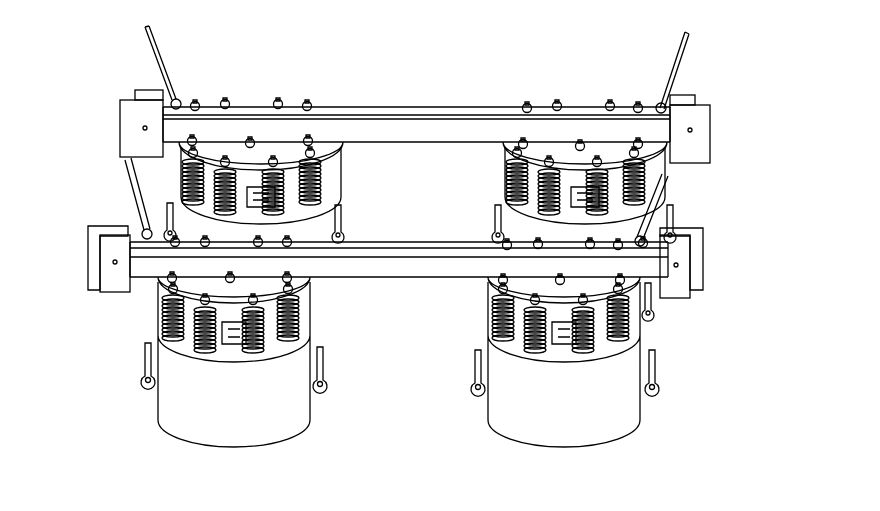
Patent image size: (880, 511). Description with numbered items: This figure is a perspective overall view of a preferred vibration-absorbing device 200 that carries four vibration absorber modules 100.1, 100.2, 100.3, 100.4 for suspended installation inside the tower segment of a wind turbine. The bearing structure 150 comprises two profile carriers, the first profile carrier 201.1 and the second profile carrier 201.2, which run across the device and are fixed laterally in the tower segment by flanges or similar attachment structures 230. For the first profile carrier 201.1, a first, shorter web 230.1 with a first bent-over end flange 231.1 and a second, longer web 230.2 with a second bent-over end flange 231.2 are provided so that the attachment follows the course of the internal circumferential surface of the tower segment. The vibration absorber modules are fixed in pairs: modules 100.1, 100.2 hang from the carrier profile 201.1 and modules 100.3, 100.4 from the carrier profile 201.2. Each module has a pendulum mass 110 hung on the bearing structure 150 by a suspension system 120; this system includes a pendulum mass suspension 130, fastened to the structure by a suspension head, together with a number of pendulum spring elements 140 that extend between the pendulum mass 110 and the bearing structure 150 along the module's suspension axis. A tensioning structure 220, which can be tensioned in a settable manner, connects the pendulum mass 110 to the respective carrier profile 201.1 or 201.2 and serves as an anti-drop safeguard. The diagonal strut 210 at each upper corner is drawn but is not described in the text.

The vibration absorber module 100.1 is at (146, 331).
The vibration absorber module 100.2 is at (660, 302).
The vibration absorber module 100.3 is at (106, 136).
The vibration absorber module 100.4 is at (673, 205).
The pendulum mass 110 is at (634, 408).
The suspension system 120 is at (477, 336).
The pendulum mass suspension 130 is at (560, 360).
The pendulum spring elements 140 is at (637, 330).
The bearing structure 150 is at (482, 300).
The vibration-absorbing device 200 is at (710, 50).
The profile carrier 201.1 is at (408, 243).
The profile carrier 201.2 is at (432, 117).
The strut 210 is at (667, 71).
The tensioning structure 220 is at (140, 360).
The attachment structures 230 is at (73, 189).
The first web 230.1 is at (118, 291).
The second web 230.2 is at (92, 225).
The first bent-over end flange 231.1 is at (92, 272).
The second bent-over end flange 231.2 is at (90, 248).